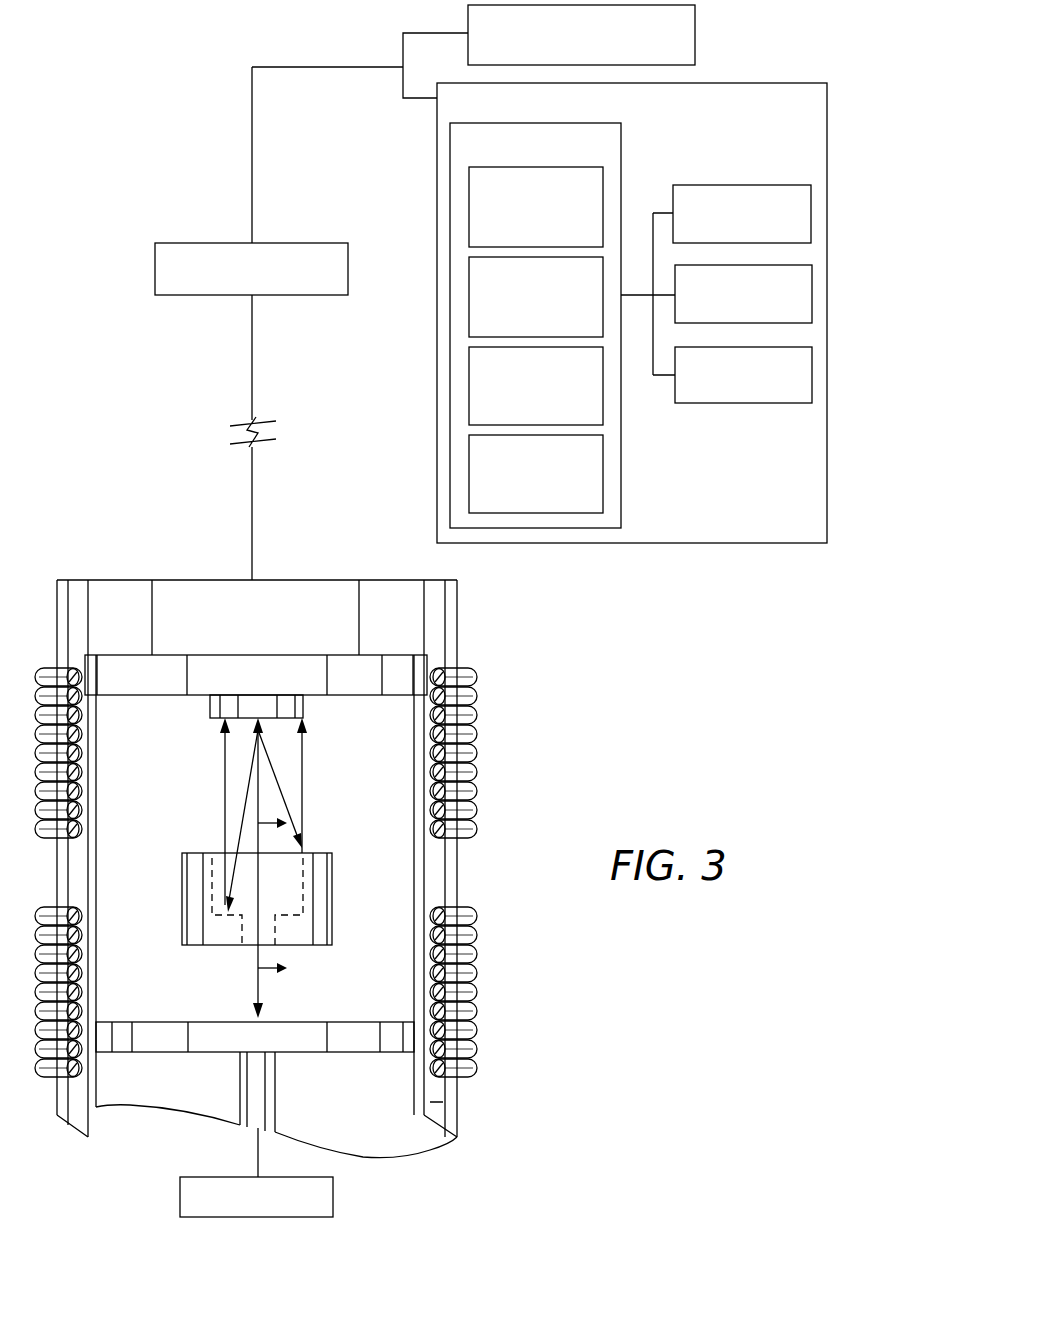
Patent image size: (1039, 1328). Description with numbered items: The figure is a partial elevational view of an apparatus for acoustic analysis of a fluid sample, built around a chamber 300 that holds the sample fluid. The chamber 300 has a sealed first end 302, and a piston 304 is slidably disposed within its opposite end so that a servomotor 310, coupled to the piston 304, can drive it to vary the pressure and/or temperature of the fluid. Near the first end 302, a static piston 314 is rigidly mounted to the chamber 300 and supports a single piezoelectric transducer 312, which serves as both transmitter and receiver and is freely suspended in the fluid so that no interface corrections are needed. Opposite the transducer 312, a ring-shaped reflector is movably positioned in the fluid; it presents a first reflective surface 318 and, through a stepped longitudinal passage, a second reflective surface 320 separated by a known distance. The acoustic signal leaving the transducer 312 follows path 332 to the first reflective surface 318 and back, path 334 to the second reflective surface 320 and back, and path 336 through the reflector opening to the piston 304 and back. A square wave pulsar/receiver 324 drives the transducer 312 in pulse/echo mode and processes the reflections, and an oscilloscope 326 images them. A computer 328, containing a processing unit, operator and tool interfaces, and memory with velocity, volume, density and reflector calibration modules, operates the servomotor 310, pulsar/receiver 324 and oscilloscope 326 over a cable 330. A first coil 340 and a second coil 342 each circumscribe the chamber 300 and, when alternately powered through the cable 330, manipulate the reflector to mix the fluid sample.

The chamber 300 is at (472, 862).
The sealed first end 302 is at (309, 578).
The piston 304 is at (312, 1022).
The servomotor 310 is at (180, 1203).
The piezoelectric transducer 312 is at (212, 712).
The static piston 314 is at (255, 660).
The first reflective surface 318 is at (200, 855).
The second reflective surface 320 is at (220, 910).
The square wave pulsar/receiver 324 is at (165, 297).
The oscilloscope 326 is at (695, 40).
The computer 328 is at (746, 152).
The cable 330 is at (252, 178).
The acoustic signal path 332 is at (302, 742).
The acoustic signal path 334 is at (225, 755).
The acoustic signal path 336 is at (277, 772).
The first coil 340 is at (478, 785).
The second coil 342 is at (478, 1048).